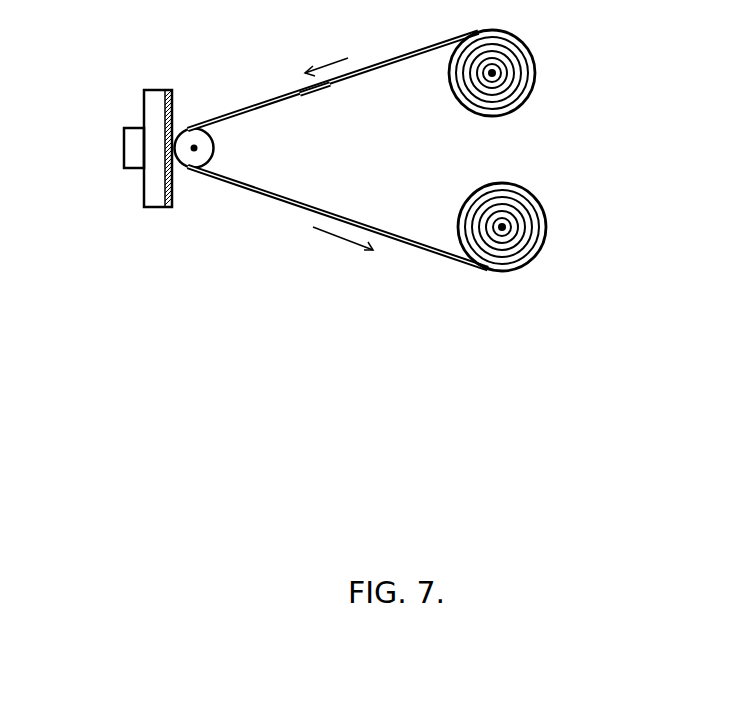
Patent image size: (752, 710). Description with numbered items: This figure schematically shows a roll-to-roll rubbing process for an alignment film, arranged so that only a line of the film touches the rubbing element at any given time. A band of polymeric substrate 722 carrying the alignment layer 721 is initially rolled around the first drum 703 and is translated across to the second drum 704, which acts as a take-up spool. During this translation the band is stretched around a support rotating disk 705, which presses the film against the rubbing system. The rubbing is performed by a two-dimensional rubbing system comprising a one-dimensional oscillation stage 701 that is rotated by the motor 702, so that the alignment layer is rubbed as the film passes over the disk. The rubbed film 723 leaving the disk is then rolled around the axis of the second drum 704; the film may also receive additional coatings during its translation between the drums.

The 1D oscillation stage 701 is at (157, 135).
The motor 702 is at (131, 160).
The first drum 703 is at (510, 65).
The second drum 704 is at (515, 227).
The support rotating disk 705 is at (204, 147).
The alignment layer 721 is at (285, 97).
The polymeric substrate 722 is at (360, 77).
The rubbed film 723 is at (302, 208).